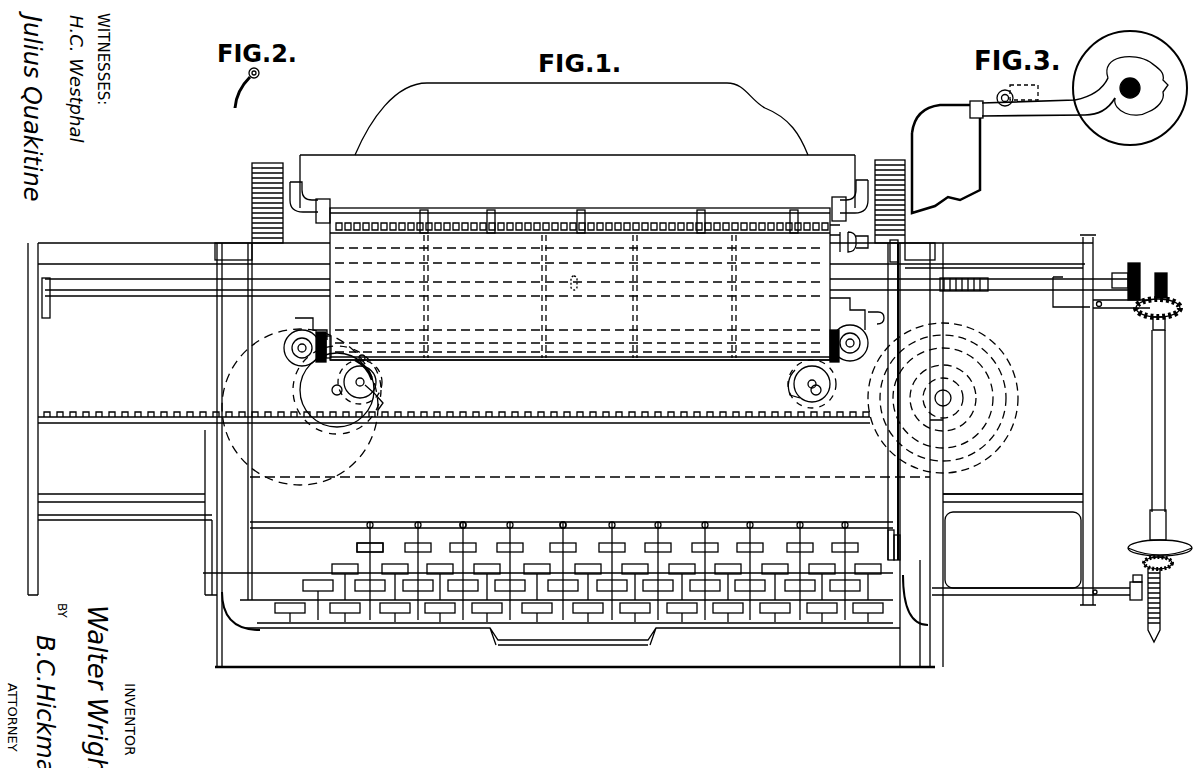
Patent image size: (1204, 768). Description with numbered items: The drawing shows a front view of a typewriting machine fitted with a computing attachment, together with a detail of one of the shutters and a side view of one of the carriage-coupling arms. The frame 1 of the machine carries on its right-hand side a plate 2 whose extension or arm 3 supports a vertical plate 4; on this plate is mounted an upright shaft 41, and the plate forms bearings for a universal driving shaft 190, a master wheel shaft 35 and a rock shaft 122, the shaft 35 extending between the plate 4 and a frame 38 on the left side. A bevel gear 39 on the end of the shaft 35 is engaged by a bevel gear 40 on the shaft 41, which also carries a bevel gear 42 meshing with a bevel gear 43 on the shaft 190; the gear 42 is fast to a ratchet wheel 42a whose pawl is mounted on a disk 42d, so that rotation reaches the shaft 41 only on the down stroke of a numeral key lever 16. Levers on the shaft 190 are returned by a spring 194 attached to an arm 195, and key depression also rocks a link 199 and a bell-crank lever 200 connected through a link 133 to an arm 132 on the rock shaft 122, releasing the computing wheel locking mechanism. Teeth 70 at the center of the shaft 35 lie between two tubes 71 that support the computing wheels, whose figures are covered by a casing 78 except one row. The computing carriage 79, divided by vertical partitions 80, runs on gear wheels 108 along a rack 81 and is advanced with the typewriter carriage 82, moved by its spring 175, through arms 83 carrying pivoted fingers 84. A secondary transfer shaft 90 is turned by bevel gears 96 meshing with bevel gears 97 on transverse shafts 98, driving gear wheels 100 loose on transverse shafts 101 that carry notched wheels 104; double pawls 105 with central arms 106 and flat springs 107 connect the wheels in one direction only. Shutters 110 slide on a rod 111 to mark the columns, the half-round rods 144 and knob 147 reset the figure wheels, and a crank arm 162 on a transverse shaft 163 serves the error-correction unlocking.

In FIG. 1, the frame 1 is at (569, 455).
In FIG. 1, the plate 2 is at (946, 543).
In FIG. 1, the extension or arm 3 is at (1015, 512).
In FIG. 1, the vertical plate 4 is at (1083, 452).
In FIG. 1, the numeral key lever 16 is at (357, 547).
In FIG. 1, the master wheel shaft 35 is at (975, 288).
In FIG. 1, the frame 38 is at (40, 373).
In FIG. 1, the bevel gear 39 is at (1140, 268).
In FIG. 1, the bevel gear 40 is at (1172, 314).
In FIG. 1, the upright shaft 41 is at (1166, 408).
In FIG. 1, the bevel gear 42 is at (1170, 566).
In FIG. 1, the ratchet wheel 42a is at (1146, 560).
In FIG. 1, the disk 42d is at (1177, 523).
In FIG. 1, the bevel gear 43 is at (1154, 641).
In FIG. 1, the teeth 70 is at (575, 292).
In FIG. 1, the tubes 71 is at (152, 294).
In FIG. 1, the casing 78 is at (580, 284).
In FIG. 1, the computing carriage 79 is at (614, 362).
In FIG. 3, the computing carriage 79 is at (912, 131).
In FIG. 1, the vertical partitions 80 is at (428, 311).
In FIG. 1, the rack 81 is at (563, 420).
In FIG. 1, the typewriter carriage 82 is at (577, 145).
In FIG. 3, the typewriter carriage 82 is at (1130, 88).
In FIG. 1, the arms 83 is at (303, 193).
In FIG. 3, the arms 83 is at (1043, 116).
In FIG. 1, the fingers 84 is at (332, 206).
In FIG. 3, the fingers 84 is at (975, 101).
In FIG. 1, the secondary transfer shaft 90 is at (506, 360).
In FIG. 1, the bevel gear 96 is at (330, 338).
In FIG. 1, the bevel gear 97 is at (292, 338).
In FIG. 1, the transverse shaft 98 is at (290, 352).
In FIG. 1, the gear wheel 100 is at (334, 433).
In FIG. 1, the transverse shaft 101 is at (296, 392).
In FIG. 1, the notched wheel 104 is at (358, 405).
In FIG. 1, the double pawl 105 is at (374, 404).
In FIG. 1, the central arm 106 is at (372, 384).
In FIG. 1, the flat spring 107 is at (366, 362).
In FIG. 1, the gear wheel 108 is at (322, 400).
In FIG. 2, the shutter 110 is at (234, 95).
In FIG. 1, the shutter 110 is at (424, 211).
In FIG. 2, the rod 111 is at (260, 75).
In FIG. 1, the rod 111 is at (644, 213).
In FIG. 1, the rock shaft 122 is at (990, 268).
In FIG. 1, the arm 132 is at (900, 250).
In FIG. 1, the link 133 is at (890, 494).
In FIG. 1, the half-round rods 144 is at (826, 236).
In FIG. 1, the knob 147 is at (863, 247).
In FIG. 1, the crank arm 162 is at (1122, 310).
In FIG. 1, the transverse shaft 163 is at (1093, 306).
In FIG. 1, the spring 175 is at (1018, 389).
In FIG. 1, the universal driving shaft 190 is at (1007, 597).
In FIG. 1, the spring 194 is at (508, 522).
In FIG. 1, the arm 195 is at (610, 522).
In FIG. 1, the link 199 is at (888, 540).
In FIG. 1, the bell-crank lever 200 is at (900, 544).